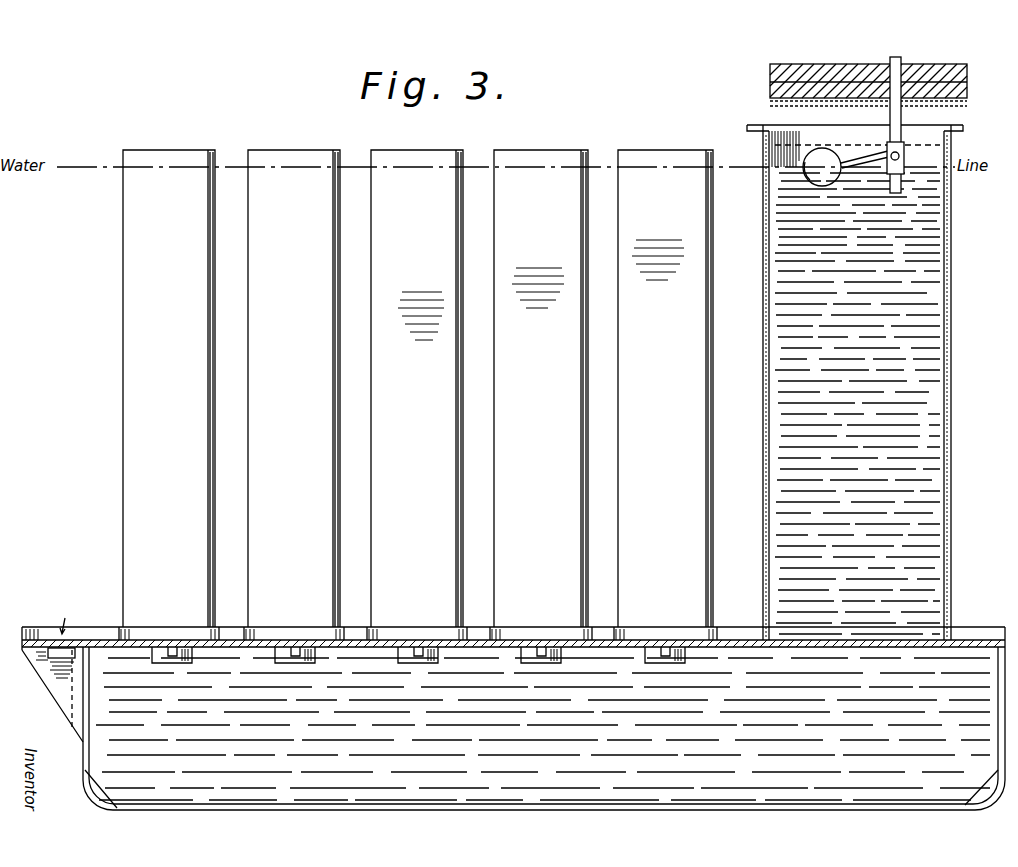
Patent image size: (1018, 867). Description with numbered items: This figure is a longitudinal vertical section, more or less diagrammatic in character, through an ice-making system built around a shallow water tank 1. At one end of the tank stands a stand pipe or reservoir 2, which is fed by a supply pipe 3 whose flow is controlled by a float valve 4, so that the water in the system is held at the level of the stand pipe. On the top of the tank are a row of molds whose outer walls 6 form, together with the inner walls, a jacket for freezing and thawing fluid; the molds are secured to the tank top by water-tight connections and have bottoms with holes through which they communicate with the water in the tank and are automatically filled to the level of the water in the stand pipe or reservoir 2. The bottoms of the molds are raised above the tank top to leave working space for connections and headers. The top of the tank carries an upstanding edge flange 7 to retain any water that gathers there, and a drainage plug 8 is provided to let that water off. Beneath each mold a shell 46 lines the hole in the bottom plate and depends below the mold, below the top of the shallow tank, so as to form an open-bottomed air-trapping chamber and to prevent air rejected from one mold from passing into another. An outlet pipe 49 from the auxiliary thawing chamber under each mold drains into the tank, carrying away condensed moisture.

The shallow water tank 1 is at (847, 796).
The stand pipe or reservoir 2 is at (941, 423).
The supply pipe 3 is at (901, 121).
The float valve 4 is at (887, 149).
The outer walls 6 is at (176, 410).
The upstanding edge flange 7 is at (27, 632).
The drainage plug 8 is at (55, 655).
The shell 46 is at (179, 667).
The outlet pipe 49 is at (175, 648).